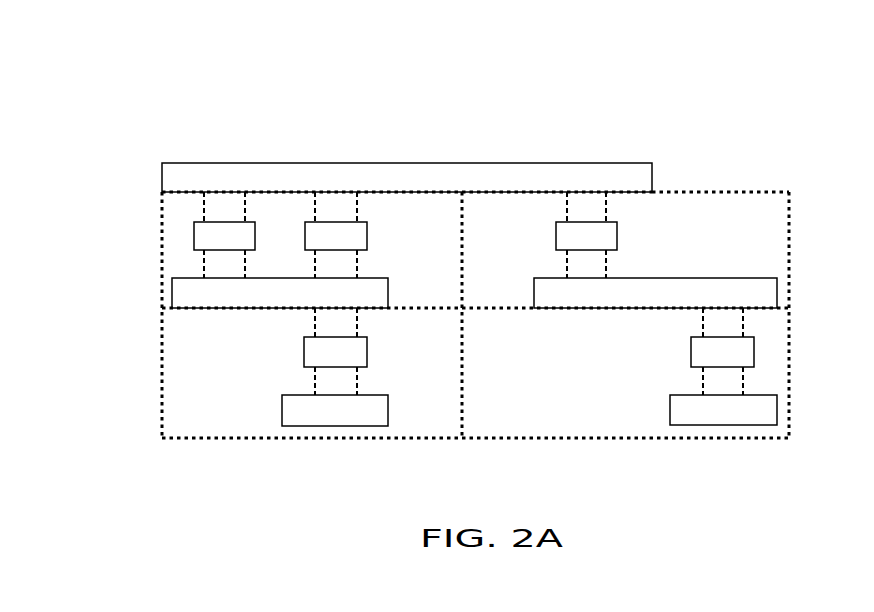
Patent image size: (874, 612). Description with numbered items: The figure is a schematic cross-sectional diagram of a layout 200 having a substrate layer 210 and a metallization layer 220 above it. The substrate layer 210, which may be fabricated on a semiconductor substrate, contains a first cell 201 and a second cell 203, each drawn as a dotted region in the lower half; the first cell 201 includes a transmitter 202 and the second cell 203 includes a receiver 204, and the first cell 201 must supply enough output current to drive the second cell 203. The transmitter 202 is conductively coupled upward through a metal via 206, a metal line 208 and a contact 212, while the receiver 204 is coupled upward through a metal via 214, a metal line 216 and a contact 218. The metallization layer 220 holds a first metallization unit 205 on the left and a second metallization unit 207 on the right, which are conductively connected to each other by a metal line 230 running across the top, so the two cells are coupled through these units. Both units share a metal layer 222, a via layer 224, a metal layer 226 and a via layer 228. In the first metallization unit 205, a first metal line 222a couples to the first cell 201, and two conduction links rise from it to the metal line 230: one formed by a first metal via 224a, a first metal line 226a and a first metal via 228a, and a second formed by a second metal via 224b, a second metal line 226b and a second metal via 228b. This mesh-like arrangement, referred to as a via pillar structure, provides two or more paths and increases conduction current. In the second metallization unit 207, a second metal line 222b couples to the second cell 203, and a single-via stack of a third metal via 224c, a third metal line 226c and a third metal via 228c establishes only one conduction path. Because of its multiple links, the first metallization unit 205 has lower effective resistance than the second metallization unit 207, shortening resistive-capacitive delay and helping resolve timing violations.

The layout 200 is at (94, 94).
The first cell 201 is at (313, 441).
The second cell 203 is at (625, 441).
The first metallization unit 205 is at (283, 191).
The second metallization unit 207 is at (706, 191).
The metal line 230 is at (406, 178).
The metallization layer 220 is at (797, 163).
The substrate layer 210 is at (797, 312).
The via layer 228 is at (106, 198).
The metal layer 226 is at (106, 226).
The via layer 224 is at (106, 255).
The metal layer 222 is at (106, 284).
The first metal via 228a is at (216, 206).
The second metal via 228b is at (342, 205).
The third metal via 228c is at (578, 205).
The first metal line 226a is at (204, 235).
The second metal line 226b is at (357, 235).
The third metal line 226c is at (567, 235).
The first metal via 224a is at (216, 264).
The second metal via 224b is at (342, 264).
The third metal via 224c is at (578, 264).
The first metal line 222a is at (184, 292).
The second metal line 222b is at (545, 292).
The contact 212 is at (342, 320).
The metal line 208 is at (357, 350).
The metal via 206 is at (342, 378).
The transmitter 202 is at (378, 407).
The contact 218 is at (715, 321).
The metal line 216 is at (703, 350).
The metal via 214 is at (715, 379).
The receiver 204 is at (682, 408).